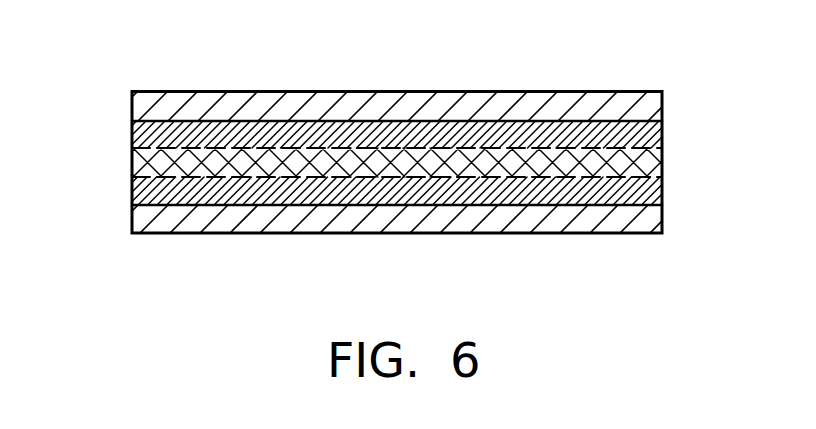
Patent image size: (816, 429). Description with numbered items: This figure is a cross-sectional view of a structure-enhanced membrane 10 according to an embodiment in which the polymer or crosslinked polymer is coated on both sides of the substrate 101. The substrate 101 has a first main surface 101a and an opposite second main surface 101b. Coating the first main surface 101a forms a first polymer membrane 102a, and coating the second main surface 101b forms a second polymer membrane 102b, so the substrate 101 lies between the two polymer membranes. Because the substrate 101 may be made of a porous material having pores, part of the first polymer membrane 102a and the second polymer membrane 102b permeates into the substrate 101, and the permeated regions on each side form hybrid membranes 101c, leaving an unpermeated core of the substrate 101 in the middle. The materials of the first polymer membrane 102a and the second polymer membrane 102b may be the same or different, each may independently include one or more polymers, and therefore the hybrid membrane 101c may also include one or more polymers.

The structure-enhanced membrane 10 is at (663, 42).
The substrate 101 is at (657, 160).
The first main surface 101a is at (180, 116).
The second main surface 101b is at (177, 207).
The hybrid membrane 101c is at (655, 131).
The first polymer membrane 102a is at (655, 106).
The second polymer membrane 102b is at (655, 215).